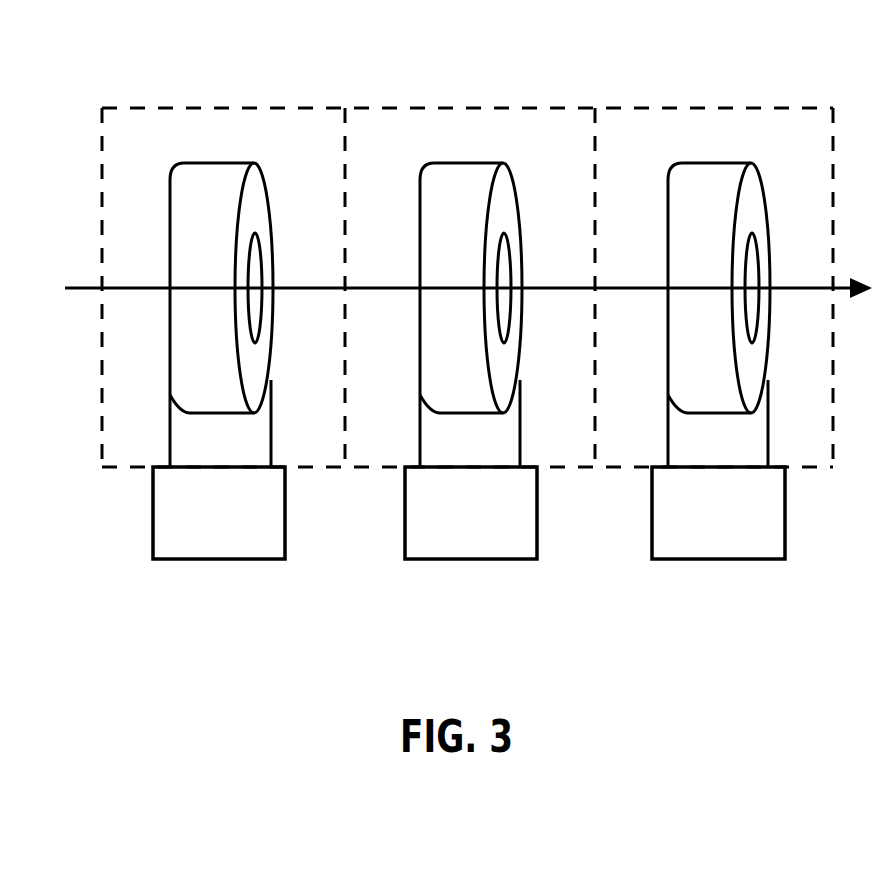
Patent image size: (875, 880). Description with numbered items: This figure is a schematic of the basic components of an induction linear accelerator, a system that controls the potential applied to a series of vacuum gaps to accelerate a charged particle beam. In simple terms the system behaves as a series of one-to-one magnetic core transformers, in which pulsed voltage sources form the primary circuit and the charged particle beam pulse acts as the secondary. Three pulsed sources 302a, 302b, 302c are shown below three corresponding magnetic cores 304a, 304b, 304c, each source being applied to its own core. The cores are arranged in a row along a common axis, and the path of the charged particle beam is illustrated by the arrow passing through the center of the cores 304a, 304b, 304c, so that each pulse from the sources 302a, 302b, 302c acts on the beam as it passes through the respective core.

The magnetic core 304a is at (192, 200).
The magnetic core 304b is at (453, 180).
The magnetic core 304c is at (700, 180).
The pulsed source 302a is at (162, 537).
The pulsed source 302b is at (425, 543).
The pulsed source 302c is at (672, 545).